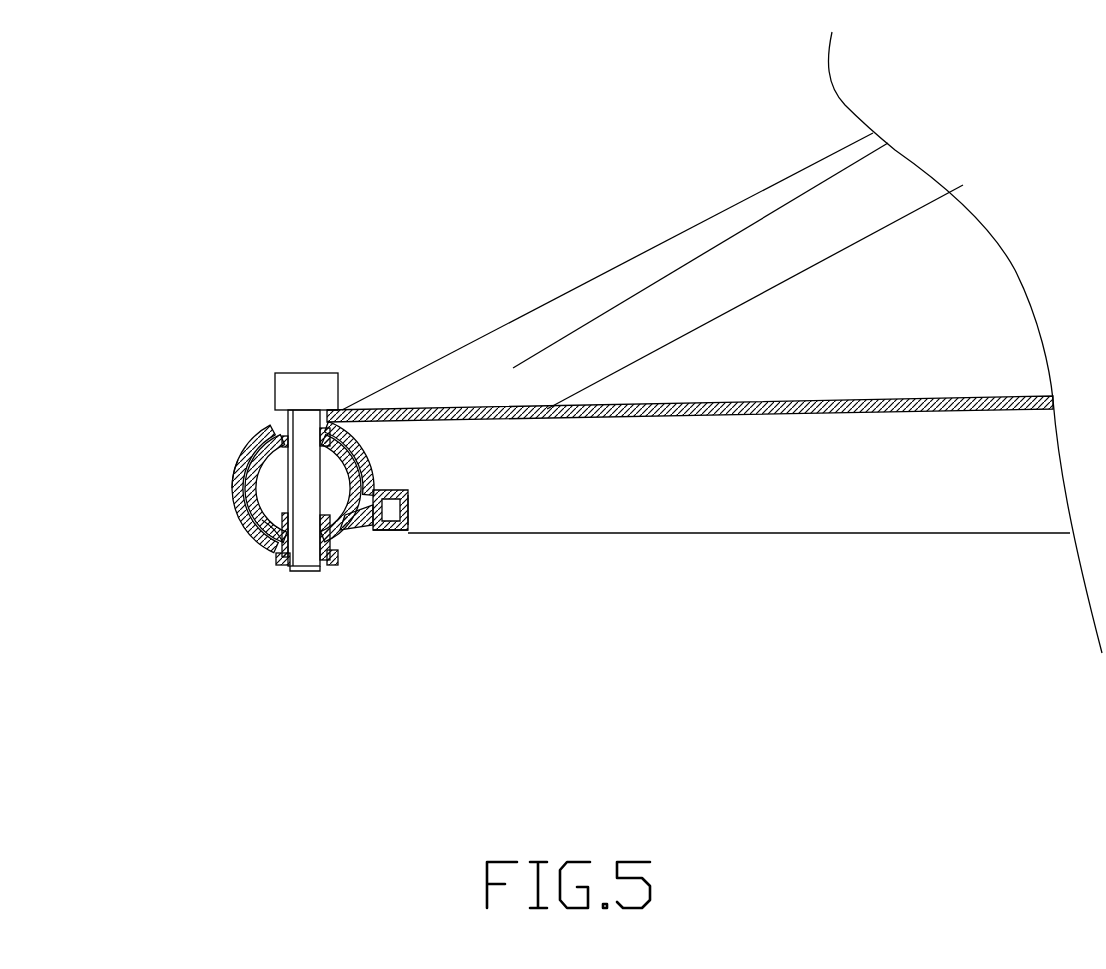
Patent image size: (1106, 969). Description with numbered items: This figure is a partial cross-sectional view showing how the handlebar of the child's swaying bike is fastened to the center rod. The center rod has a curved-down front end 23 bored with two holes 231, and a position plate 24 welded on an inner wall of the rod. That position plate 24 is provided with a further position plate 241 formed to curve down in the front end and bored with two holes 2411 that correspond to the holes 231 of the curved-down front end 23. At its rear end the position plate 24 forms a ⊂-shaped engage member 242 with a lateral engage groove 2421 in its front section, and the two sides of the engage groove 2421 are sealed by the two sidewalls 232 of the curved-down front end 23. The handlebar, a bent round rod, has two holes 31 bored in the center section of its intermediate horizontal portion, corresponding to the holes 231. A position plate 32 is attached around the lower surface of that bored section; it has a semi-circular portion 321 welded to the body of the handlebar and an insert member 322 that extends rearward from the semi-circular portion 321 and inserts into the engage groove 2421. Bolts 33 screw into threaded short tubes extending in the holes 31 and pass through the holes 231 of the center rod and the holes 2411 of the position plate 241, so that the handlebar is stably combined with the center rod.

The curved-down front end 23 is at (268, 427).
The holes 231 is at (332, 530).
The sidewalls 232 is at (700, 510).
The position plate 24 is at (236, 458).
The position plate 241 is at (237, 483).
The holes 2411 is at (347, 540).
The engage member 242 is at (408, 512).
The engage groove 2421 is at (390, 535).
The holes 31 is at (316, 566).
The position plate 32 is at (244, 505).
The semi-circular portion 321 is at (267, 540).
The insert member 322 is at (276, 562).
The bolts 33 is at (310, 373).